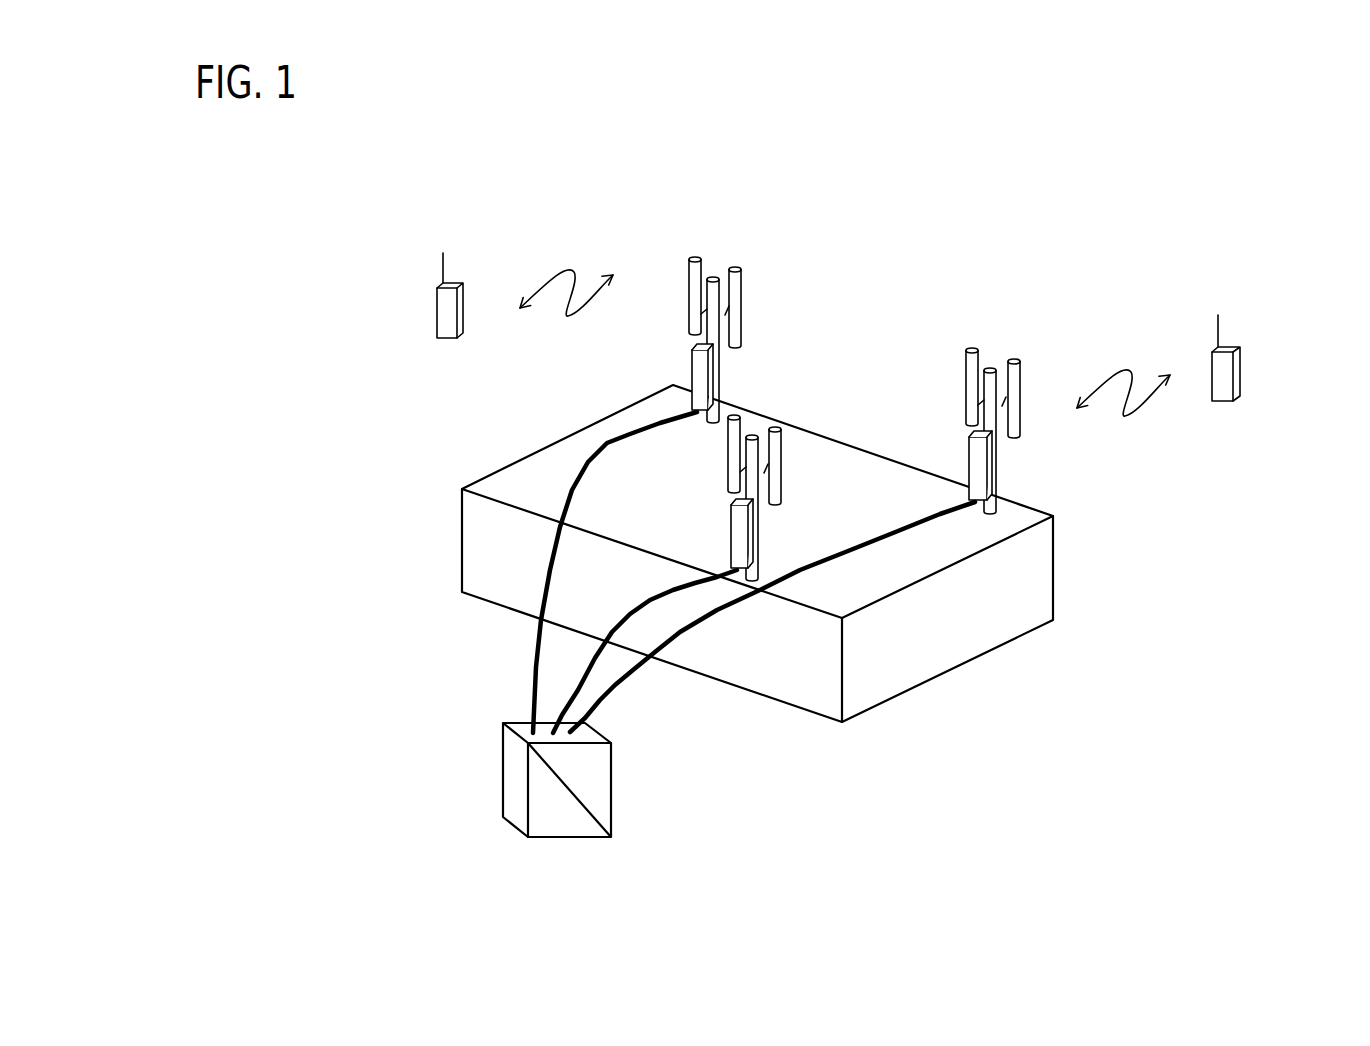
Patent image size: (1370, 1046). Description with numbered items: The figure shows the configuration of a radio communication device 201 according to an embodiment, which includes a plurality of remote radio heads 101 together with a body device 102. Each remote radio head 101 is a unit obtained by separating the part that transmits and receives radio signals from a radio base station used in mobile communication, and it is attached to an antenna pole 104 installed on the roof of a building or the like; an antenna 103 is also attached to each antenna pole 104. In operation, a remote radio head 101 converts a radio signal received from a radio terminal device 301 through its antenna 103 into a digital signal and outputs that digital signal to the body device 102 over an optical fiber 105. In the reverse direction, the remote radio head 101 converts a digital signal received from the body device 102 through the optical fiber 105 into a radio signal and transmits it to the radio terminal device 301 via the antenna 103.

The remote radio head 101 is at (690, 358).
The body device 102 is at (503, 763).
The antenna 103 is at (743, 275).
The antenna pole 104 is at (715, 273).
The optical fiber 105 is at (607, 443).
The radio communication device 201 is at (963, 228).
The radio terminal device 301 is at (460, 284).